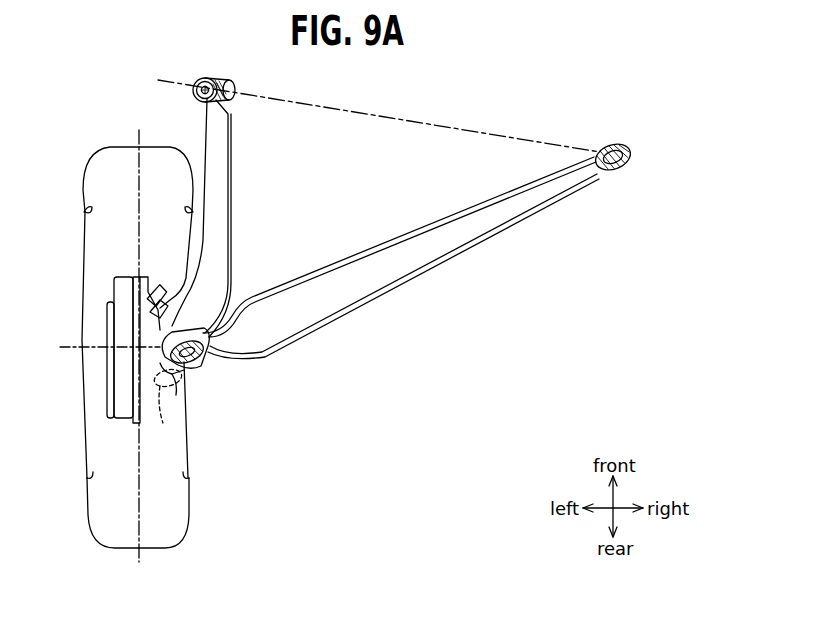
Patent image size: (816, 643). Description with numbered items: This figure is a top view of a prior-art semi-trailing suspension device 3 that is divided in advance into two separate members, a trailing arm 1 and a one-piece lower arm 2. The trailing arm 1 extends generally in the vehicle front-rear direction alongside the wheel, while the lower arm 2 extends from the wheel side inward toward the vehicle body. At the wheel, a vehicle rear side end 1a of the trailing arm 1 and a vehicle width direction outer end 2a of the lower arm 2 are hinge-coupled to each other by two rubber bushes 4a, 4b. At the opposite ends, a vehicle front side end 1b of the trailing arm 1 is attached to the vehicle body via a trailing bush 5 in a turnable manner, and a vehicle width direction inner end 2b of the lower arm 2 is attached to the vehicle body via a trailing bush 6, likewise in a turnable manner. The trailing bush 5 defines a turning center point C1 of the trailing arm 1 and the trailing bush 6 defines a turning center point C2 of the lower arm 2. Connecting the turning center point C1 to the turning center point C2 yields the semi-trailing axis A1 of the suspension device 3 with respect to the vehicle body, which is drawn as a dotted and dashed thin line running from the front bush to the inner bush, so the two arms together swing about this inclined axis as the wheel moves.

The trailing arm 1 is at (238, 195).
The vehicle rear side end 1a is at (163, 333).
The vehicle front side end 1b is at (200, 112).
The lower arm 2 is at (420, 281).
The vehicle width direction outer end 2a is at (212, 366).
The vehicle width direction inner end 2b is at (602, 180).
The semi-trailing suspension device 3 is at (452, 112).
The rubber bush 4a is at (202, 370).
The rubber bush 4b is at (167, 406).
The trailing bush 5 is at (233, 81).
The trailing bush 6 is at (631, 152).
The turning center point C1 is at (214, 79).
The turning center point C2 is at (609, 146).
The semi-trailing axis A1 is at (390, 130).